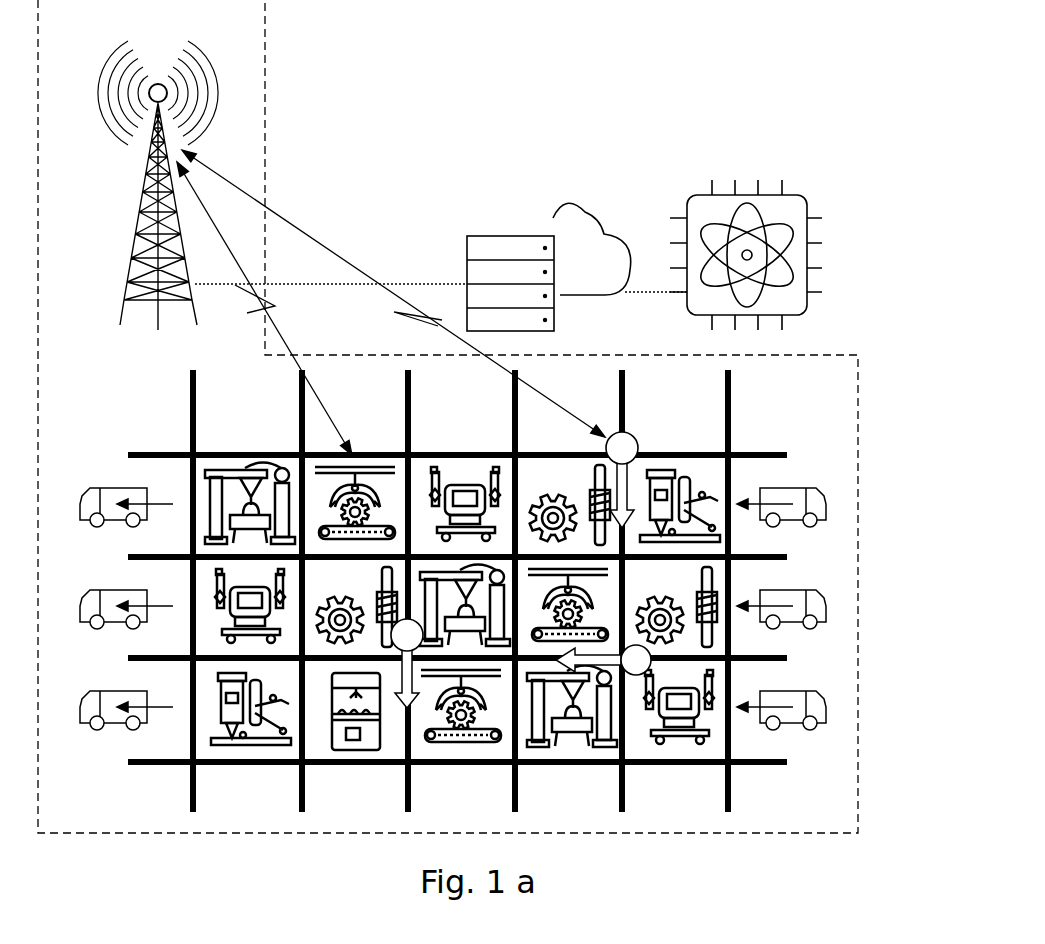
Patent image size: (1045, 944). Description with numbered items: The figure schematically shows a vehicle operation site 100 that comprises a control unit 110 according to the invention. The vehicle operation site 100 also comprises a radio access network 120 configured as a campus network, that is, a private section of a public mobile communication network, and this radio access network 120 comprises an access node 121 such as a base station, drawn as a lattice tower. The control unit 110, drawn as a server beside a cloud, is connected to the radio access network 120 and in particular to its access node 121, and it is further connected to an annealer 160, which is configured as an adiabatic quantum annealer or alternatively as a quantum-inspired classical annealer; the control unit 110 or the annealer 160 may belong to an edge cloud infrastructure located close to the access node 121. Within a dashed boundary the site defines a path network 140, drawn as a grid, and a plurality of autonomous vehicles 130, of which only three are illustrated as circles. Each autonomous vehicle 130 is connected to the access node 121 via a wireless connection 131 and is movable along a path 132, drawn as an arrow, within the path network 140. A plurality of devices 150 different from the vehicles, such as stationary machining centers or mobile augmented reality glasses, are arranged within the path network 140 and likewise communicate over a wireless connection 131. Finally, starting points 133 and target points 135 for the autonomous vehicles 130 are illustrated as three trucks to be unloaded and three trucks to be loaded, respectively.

The vehicle operation site 100 is at (846, 147).
The control unit 110 is at (505, 236).
The radio access network 120 is at (266, 130).
The access node 121 is at (157, 82).
The autonomous vehicle 130 is at (640, 440).
The wireless connection 131 is at (322, 245).
The path 132 is at (632, 482).
The starting point 133 is at (810, 488).
The target point 135 is at (90, 488).
The path network 140 is at (758, 452).
The device 150 is at (377, 456).
The annealer 160 is at (745, 195).